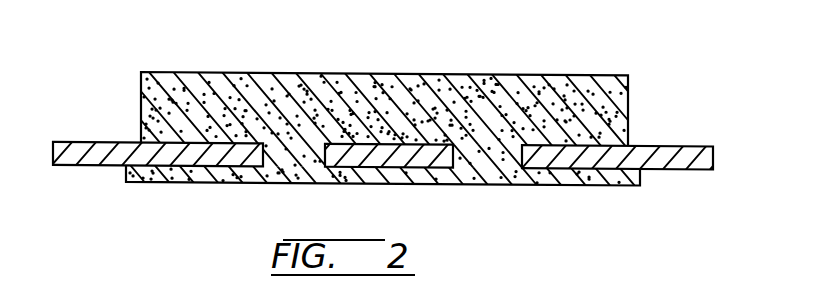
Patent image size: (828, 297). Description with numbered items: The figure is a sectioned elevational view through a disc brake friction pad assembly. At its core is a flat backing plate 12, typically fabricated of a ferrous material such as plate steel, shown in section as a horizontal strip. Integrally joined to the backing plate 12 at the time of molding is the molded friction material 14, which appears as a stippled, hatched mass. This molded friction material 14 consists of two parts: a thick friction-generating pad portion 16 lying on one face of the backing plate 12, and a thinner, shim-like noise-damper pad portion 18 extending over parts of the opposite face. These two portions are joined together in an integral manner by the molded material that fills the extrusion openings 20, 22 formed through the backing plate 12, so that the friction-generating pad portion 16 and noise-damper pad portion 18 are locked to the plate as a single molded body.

The backing plate 12 is at (713, 159).
The molded friction material 14 is at (512, 72).
The friction-generating pad portion 16 is at (628, 92).
The noise-damper pad portion 18 is at (563, 186).
The extrusion opening 20 is at (268, 158).
The extrusion opening 22 is at (455, 157).